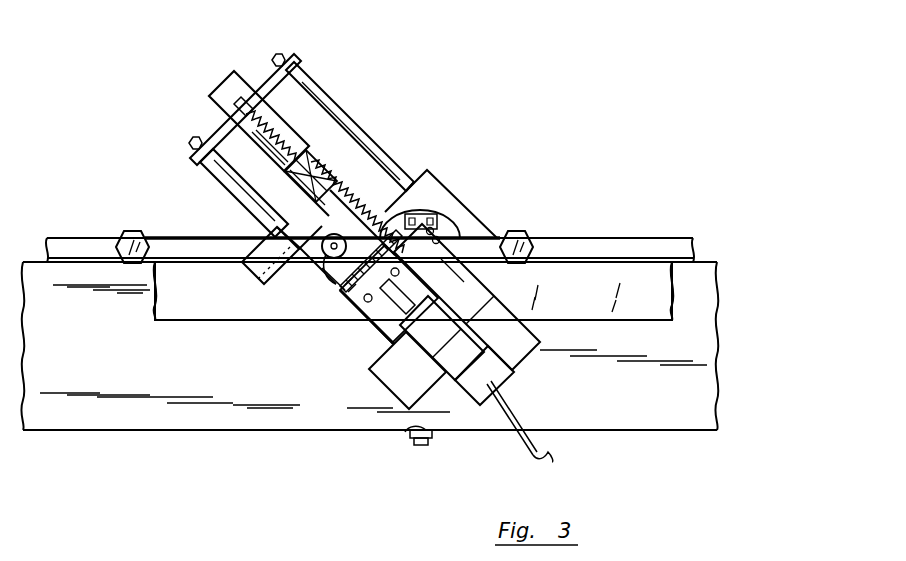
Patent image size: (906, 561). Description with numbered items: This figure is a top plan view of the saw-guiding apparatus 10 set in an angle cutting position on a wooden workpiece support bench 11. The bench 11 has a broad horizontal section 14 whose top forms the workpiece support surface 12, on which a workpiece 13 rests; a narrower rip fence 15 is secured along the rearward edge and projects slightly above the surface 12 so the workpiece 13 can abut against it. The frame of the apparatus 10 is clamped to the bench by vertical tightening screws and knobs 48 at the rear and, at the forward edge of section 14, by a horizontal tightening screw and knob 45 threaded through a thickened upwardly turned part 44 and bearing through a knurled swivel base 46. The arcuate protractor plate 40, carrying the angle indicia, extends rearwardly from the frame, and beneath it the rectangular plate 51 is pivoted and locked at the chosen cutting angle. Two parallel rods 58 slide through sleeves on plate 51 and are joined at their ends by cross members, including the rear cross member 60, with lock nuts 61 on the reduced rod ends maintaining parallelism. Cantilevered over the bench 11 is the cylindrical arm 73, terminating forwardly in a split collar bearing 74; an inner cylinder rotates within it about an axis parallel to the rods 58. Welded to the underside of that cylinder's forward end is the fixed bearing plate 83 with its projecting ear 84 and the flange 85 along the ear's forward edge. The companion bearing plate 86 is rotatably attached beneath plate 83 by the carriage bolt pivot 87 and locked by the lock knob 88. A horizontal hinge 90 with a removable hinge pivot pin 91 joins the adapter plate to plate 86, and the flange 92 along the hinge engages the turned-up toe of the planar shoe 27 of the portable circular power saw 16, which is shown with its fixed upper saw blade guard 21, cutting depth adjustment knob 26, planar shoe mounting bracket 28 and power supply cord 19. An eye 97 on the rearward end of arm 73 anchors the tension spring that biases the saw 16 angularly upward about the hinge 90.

The apparatus 10 is at (466, 166).
The workpiece support bench 11 is at (668, 218).
The workpiece support surface 12 is at (150, 387).
The workpiece 13 is at (545, 272).
The horizontal section 14 is at (190, 432).
The rip fence 15 is at (620, 238).
The portable circular power saw 16 is at (372, 388).
The power supply cord 19 is at (532, 440).
The fixed upper saw blade guard 21 is at (525, 362).
The cutting depth adjustment knob 26 is at (407, 370).
The planar shoe 27 is at (514, 312).
The planar shoe mounting bracket 28 is at (382, 332).
The protractor plate 40 is at (455, 218).
The thickened upwardly turned part 44 is at (428, 440).
The horizontal tightening screw and knob 45 is at (415, 445).
The swivel base 46 is at (405, 430).
The vertical tightening screws and knobs 48 is at (125, 232).
The rectangular plate 51 is at (429, 170).
The rods 58 is at (313, 90).
The rear cross member 60 is at (213, 128).
The lock nuts 61 is at (190, 146).
The cylindrical arm 73 is at (300, 148).
The collar bearing 74 is at (332, 165).
The fixed bearing plate 83 is at (282, 200).
The projecting ear 84 is at (242, 266).
The flange 85 is at (262, 284).
The companion bearing plate 86 is at (336, 284).
The carriage bolt pivot 87 is at (322, 240).
The lock knob 88 is at (325, 256).
The horizontal hinge 90 is at (345, 286).
The hinge pivot pin 91 is at (352, 292).
The flange 92 is at (362, 296).
The eye 97 is at (232, 102).